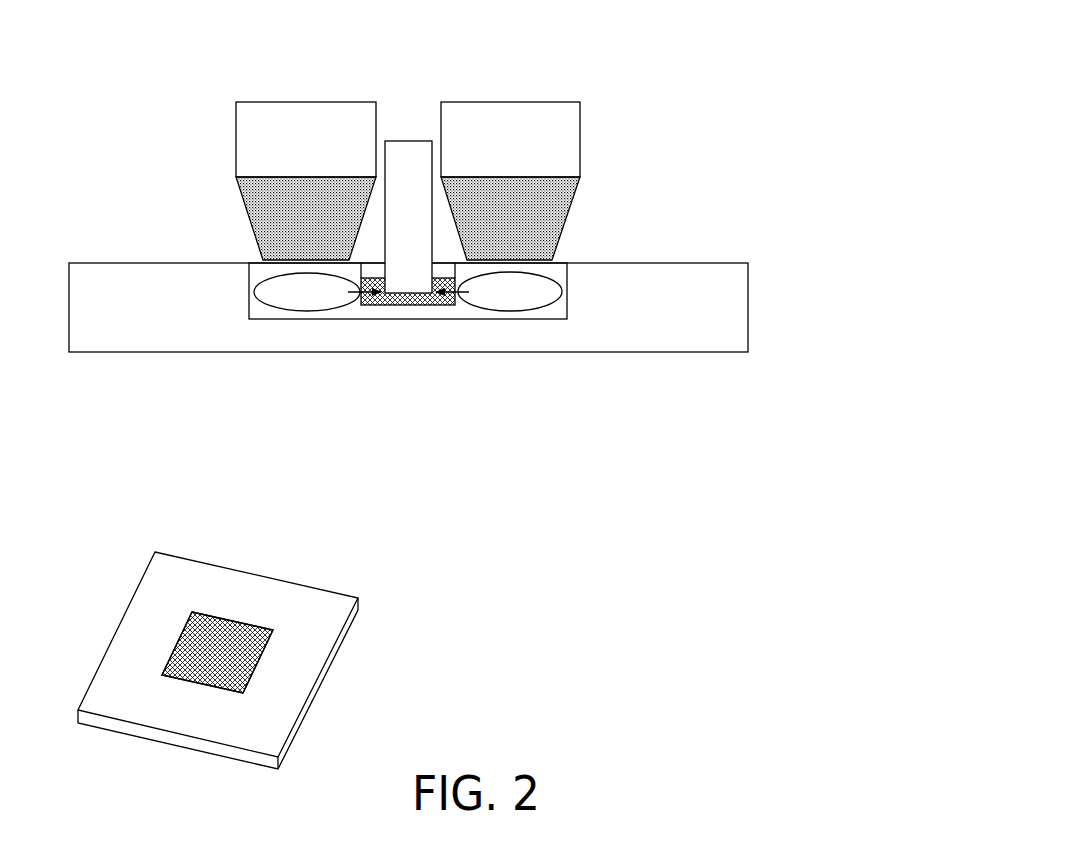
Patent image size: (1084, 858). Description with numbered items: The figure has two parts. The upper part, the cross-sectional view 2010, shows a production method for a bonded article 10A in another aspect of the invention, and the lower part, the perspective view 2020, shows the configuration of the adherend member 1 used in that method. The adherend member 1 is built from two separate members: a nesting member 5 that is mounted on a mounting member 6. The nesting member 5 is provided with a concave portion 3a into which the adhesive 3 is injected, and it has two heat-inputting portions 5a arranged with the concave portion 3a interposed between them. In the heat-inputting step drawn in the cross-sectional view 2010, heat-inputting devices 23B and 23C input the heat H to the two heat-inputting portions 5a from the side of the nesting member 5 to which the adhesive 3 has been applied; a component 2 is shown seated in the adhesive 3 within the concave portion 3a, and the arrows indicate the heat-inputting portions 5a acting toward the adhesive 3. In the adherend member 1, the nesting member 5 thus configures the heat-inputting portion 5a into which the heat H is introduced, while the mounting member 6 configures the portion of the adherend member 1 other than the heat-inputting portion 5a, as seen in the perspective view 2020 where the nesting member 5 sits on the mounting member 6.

The adherend member 1 is at (752, 270).
The electronic component terminal 2 is at (410, 150).
The adhesive 3 is at (407, 305).
The concave portion 3a is at (370, 303).
The nesting member 5 is at (240, 628).
The heat-inputting portion 5a is at (305, 300).
The mounting member 6 is at (650, 352).
The heat-inputting device 23B is at (312, 102).
The heat-inputting device 23C is at (515, 102).
The heat H is at (250, 218).
The bonded article 10A is at (774, 153).
The cross-sectional view 2010 is at (869, 108).
The perspective view 2020 is at (421, 545).